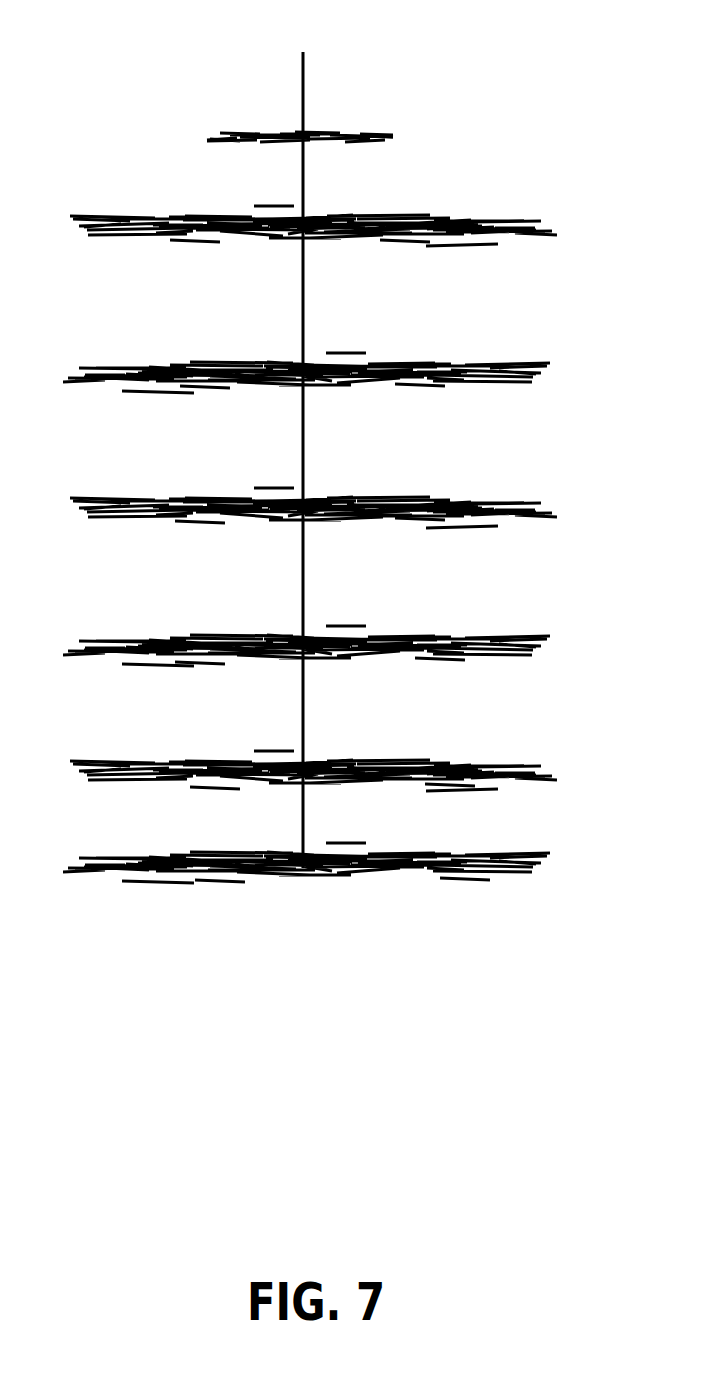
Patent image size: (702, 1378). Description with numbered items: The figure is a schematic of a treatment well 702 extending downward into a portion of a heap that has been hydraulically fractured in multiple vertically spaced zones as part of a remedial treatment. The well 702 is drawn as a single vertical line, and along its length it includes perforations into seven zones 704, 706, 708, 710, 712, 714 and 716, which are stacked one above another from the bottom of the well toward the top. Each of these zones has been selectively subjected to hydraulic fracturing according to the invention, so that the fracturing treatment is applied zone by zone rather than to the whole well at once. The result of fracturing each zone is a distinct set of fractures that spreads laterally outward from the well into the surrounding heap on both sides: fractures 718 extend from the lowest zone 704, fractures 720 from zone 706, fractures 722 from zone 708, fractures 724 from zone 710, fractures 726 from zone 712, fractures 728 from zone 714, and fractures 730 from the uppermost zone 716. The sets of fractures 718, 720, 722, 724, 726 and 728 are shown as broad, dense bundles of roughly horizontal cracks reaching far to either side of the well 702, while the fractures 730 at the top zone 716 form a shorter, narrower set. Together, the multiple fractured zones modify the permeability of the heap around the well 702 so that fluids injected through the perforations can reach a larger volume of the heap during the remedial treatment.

The well 702 is at (303, 52).
The zone 704 is at (307, 873).
The zone 706 is at (295, 763).
The zone 708 is at (295, 637).
The zone 710 is at (295, 498).
The zone 712 is at (297, 360).
The zone 714 is at (292, 213).
The zone 716 is at (298, 128).
The fractures 718 is at (222, 887).
The fractures 720 is at (218, 795).
The fractures 722 is at (202, 670).
The fractures 724 is at (200, 528).
The fractures 726 is at (207, 393).
The fractures 728 is at (195, 247).
The fractures 730 is at (227, 130).